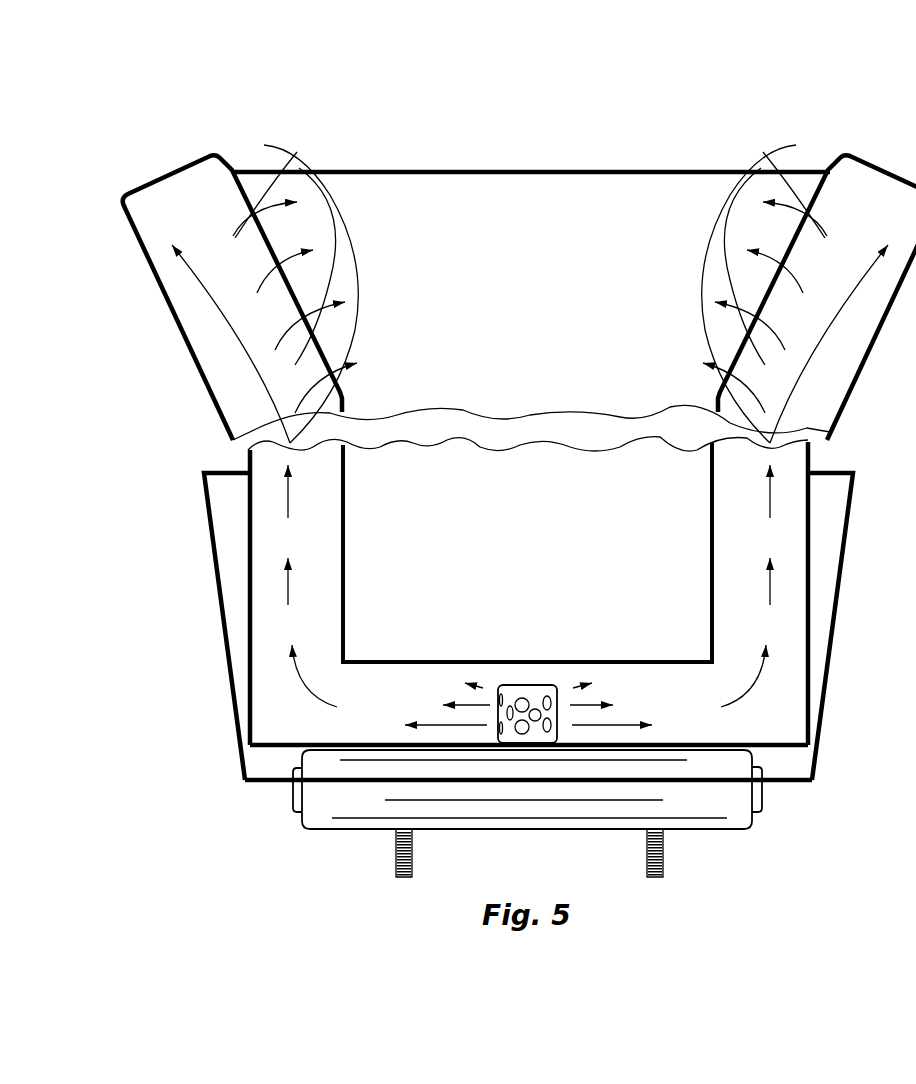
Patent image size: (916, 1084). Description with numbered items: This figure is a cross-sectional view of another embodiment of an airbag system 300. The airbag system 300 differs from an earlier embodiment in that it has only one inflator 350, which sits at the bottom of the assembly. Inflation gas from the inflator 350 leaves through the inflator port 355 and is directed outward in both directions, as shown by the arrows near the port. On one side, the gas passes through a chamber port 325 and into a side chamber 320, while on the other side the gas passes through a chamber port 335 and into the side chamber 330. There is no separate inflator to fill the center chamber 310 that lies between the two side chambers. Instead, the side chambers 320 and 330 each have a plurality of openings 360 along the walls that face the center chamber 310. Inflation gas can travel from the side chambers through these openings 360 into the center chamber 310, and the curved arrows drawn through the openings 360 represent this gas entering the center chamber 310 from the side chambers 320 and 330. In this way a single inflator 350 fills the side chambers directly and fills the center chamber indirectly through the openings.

The airbag system 300 is at (519, 486).
The center chamber 310 is at (532, 200).
The side chamber 320 is at (212, 224).
The side chamber 330 is at (887, 224).
The chamber port 325 is at (268, 655).
The chamber port 335 is at (787, 634).
The inflator 350 is at (708, 842).
The inflator port 355 is at (530, 690).
The openings 360 is at (532, 287).